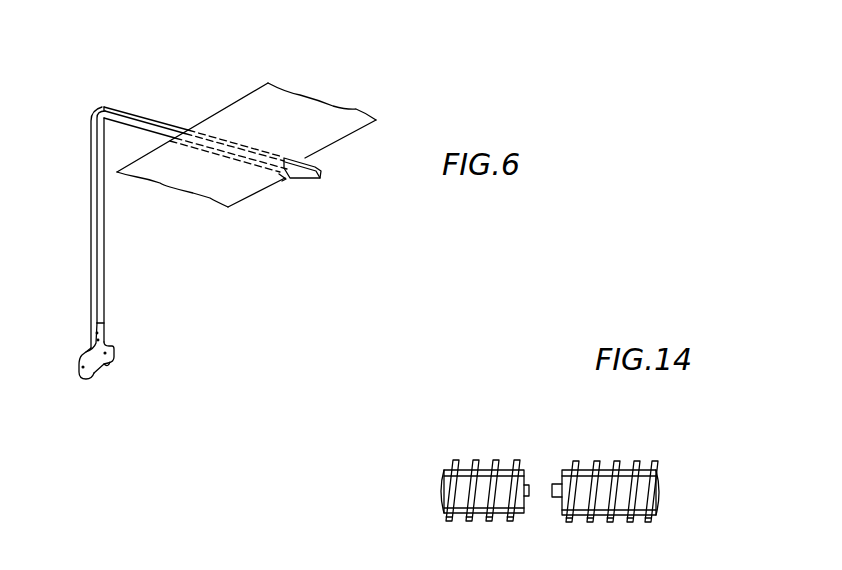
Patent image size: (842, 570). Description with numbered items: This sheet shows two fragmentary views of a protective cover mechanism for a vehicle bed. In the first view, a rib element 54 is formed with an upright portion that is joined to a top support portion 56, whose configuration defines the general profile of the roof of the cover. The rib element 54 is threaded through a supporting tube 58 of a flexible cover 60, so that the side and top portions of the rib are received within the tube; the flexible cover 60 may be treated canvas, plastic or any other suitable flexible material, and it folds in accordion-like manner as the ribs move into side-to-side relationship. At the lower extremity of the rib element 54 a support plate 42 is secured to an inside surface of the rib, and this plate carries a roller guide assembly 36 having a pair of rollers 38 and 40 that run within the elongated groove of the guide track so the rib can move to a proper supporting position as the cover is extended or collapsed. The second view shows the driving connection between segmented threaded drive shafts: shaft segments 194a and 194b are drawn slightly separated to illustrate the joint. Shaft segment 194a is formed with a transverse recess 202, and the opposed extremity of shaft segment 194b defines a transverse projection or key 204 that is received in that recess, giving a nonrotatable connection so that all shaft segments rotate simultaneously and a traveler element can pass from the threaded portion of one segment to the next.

In FIG. 6, the roller guide assembly 36 is at (113, 338).
In FIG. 6, the roller 38 is at (111, 363).
In FIG. 6, the roller 40 is at (87, 381).
In FIG. 6, the support plate 42 is at (112, 350).
In FIG. 6, the rib element 54 is at (90, 213).
In FIG. 6, the top support portion 56 is at (320, 167).
In FIG. 6, the supporting tube 58 is at (285, 181).
In FIG. 6, the flexible cover 60 is at (277, 105).
In FIG. 14, the shaft segment 194a is at (518, 462).
In FIG. 14, the shaft segment 194b is at (596, 462).
In FIG. 14, the transverse recess 202 is at (526, 489).
In FIG. 14, the transverse projection or key 204 is at (553, 498).